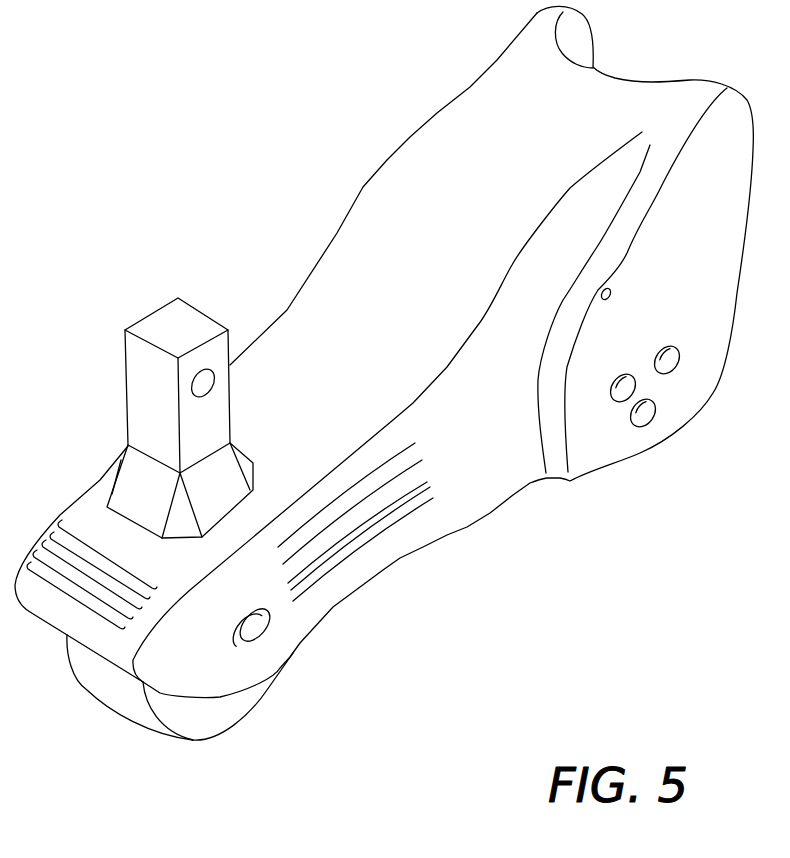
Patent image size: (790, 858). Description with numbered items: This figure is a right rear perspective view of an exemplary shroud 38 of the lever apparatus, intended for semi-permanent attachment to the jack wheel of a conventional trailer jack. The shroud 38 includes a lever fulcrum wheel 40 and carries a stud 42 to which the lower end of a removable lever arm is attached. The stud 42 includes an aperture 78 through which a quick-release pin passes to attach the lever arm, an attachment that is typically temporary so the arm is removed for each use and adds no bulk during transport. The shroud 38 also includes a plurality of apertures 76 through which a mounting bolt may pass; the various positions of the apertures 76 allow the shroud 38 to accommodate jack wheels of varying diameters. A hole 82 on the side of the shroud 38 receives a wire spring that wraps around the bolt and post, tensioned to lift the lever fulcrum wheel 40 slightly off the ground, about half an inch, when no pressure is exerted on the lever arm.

The shroud 38 is at (361, 196).
The lever fulcrum wheel 40 is at (215, 723).
The stud 42 is at (147, 380).
The apertures 76 is at (668, 375).
The aperture 78 is at (213, 377).
The hole 82 is at (610, 287).